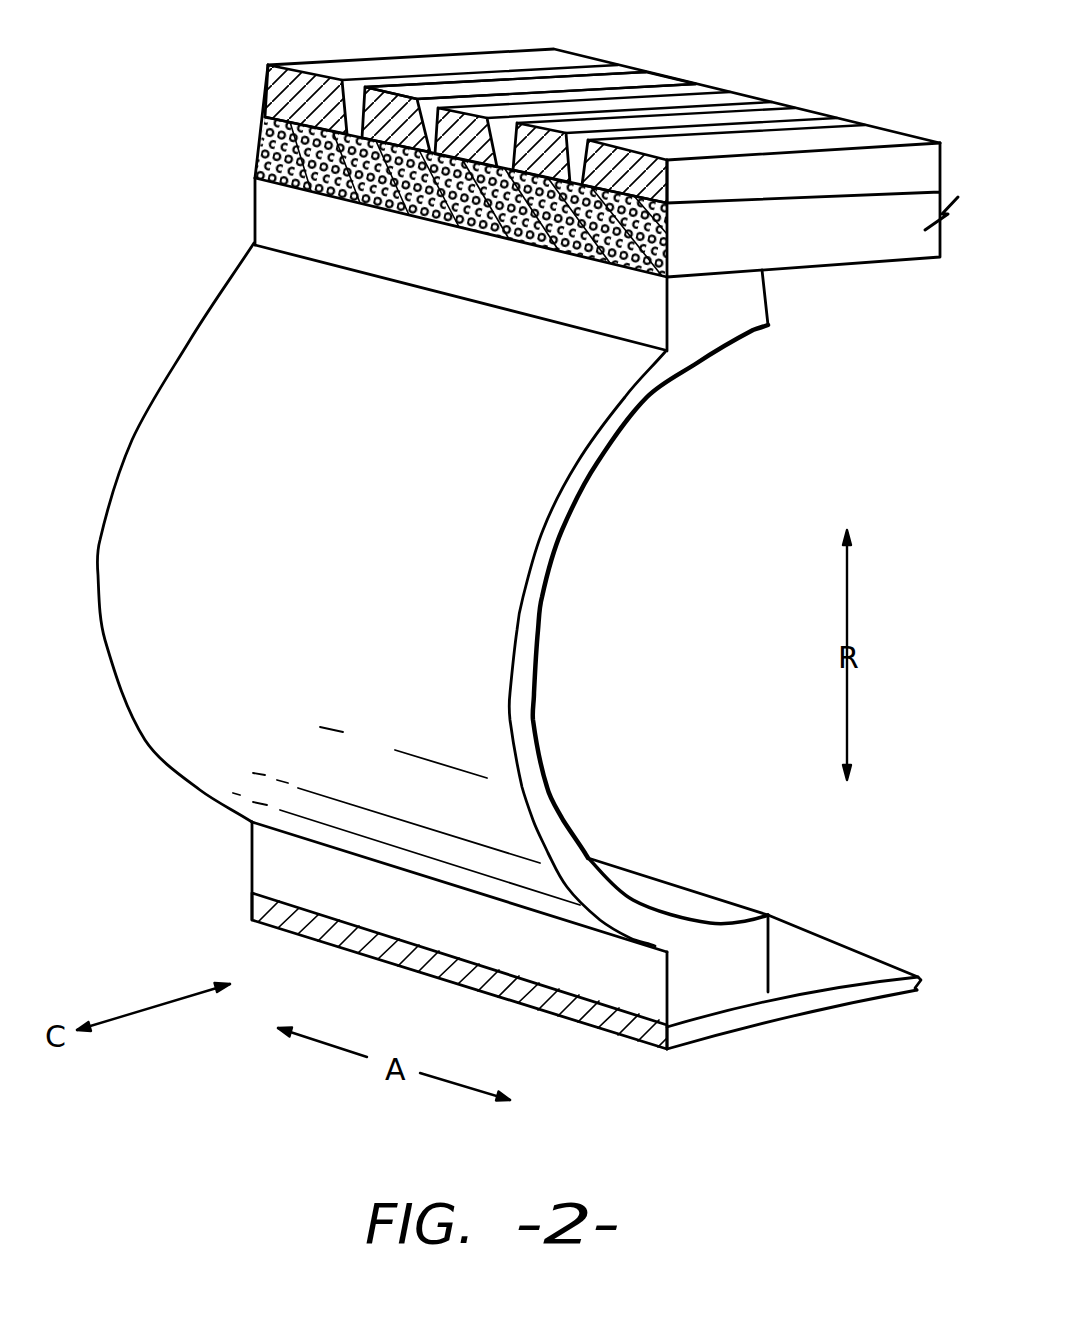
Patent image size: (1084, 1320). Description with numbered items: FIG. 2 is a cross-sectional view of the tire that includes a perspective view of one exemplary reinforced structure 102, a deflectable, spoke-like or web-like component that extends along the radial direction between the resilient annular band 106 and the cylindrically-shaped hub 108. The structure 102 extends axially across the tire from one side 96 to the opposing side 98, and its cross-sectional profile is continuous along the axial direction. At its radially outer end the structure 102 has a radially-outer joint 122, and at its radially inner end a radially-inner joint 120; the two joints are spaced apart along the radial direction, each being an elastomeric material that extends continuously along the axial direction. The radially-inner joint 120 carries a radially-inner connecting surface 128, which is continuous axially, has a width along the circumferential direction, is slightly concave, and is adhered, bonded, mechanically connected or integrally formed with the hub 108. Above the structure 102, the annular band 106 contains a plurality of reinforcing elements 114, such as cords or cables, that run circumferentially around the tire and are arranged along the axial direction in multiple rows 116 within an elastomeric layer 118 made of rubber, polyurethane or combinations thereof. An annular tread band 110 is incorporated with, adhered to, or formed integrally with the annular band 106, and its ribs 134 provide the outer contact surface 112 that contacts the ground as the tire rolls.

The side 96 is at (118, 358).
The opposing side 98 is at (630, 513).
The reinforced structure 102 is at (143, 553).
The annular band 106 is at (775, 243).
The hub 108 is at (604, 1030).
The tread band 110 is at (813, 178).
The outer contact surface 112 is at (503, 45).
The reinforcing elements 114 is at (272, 118).
The rows 116 is at (253, 135).
The elastomeric layer 118 is at (297, 128).
The radially-inner joint 120 is at (742, 962).
The radially-outer joint 122 is at (720, 318).
The radially-inner connecting surface 128 is at (711, 1016).
The ribs 134 is at (417, 97).